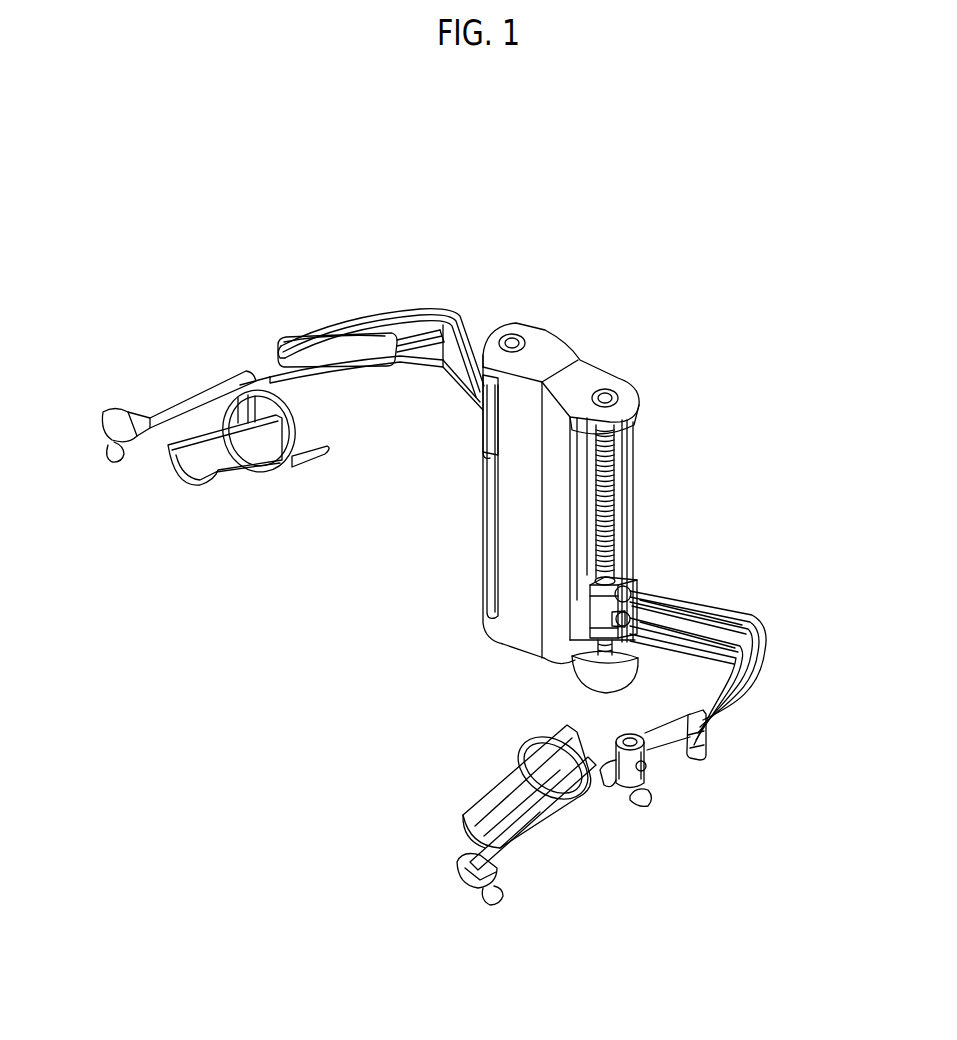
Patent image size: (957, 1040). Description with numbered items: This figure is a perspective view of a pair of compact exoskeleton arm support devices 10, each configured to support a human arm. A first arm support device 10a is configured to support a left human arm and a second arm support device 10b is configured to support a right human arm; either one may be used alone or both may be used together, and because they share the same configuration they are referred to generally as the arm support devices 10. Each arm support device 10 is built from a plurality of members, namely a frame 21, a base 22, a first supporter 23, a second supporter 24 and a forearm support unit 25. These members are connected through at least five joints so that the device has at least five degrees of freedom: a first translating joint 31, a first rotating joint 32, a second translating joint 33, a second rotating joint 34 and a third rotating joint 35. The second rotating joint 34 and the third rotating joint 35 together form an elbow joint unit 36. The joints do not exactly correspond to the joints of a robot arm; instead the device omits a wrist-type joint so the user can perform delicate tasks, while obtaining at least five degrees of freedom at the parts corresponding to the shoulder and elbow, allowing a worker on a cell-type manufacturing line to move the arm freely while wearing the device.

The compact exoskeleton arm support device 10 is at (387, 167).
The first arm support device 10a is at (705, 593).
The second arm support device 10b is at (390, 308).
The frame 21 is at (575, 372).
The base 22 is at (583, 604).
The first supporter 23 is at (742, 716).
The second supporter 24 is at (670, 740).
The forearm support unit 25 is at (507, 798).
The first translating joint 31 is at (618, 574).
The first rotating joint 32 is at (603, 630).
The second translating joint 33 is at (737, 727).
The second rotating joint 34 is at (640, 765).
The third rotating joint 35 is at (640, 802).
The elbow joint unit 36 is at (766, 799).